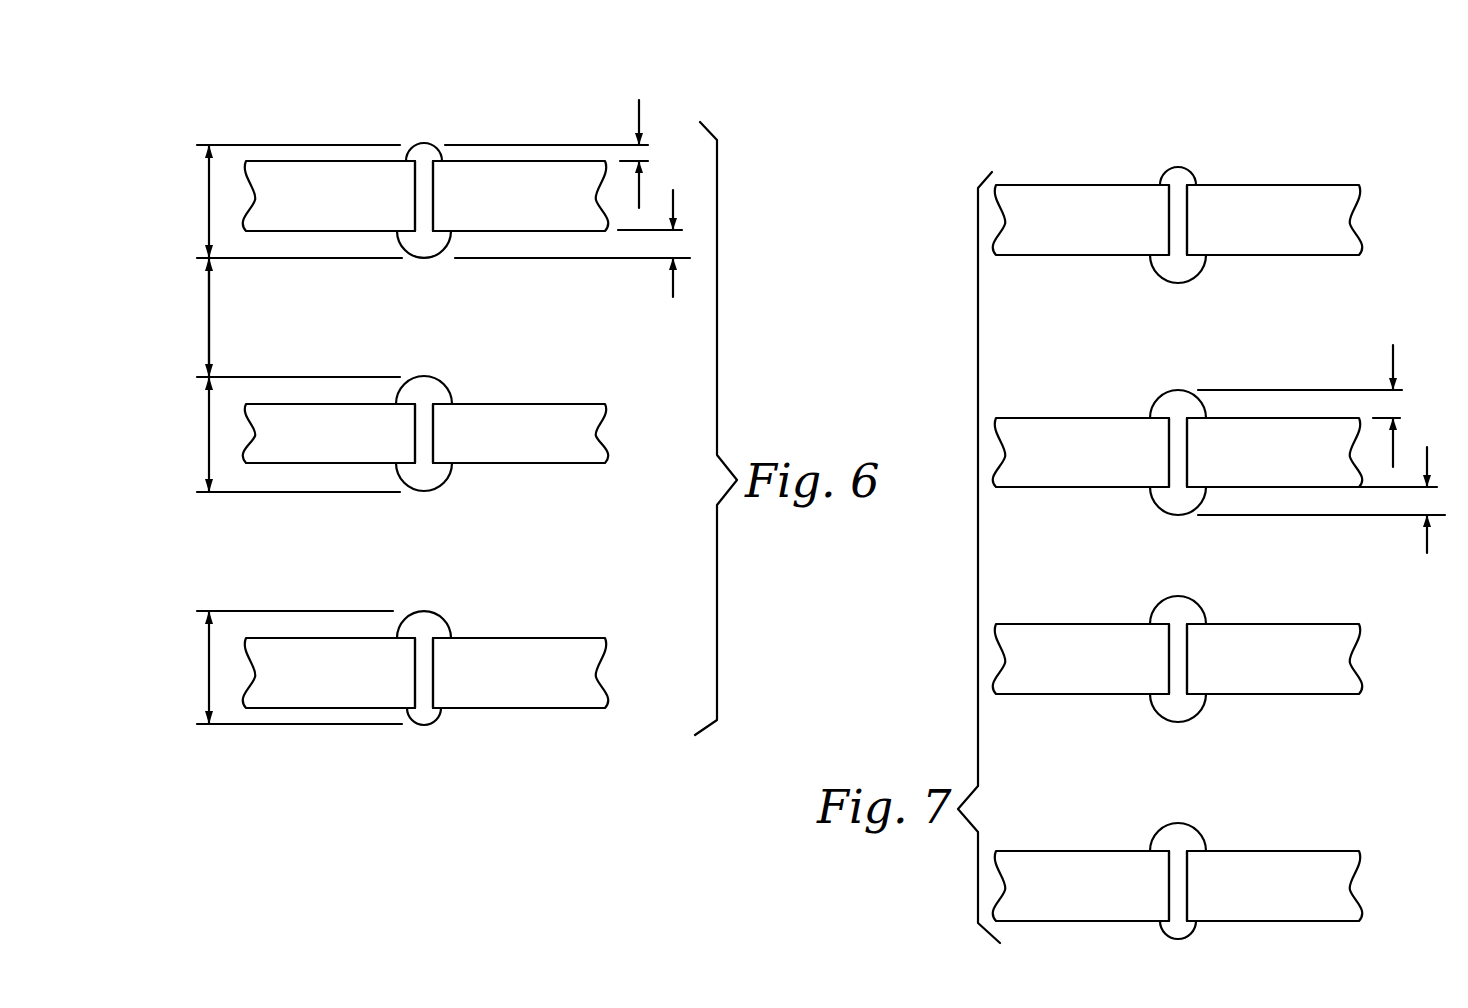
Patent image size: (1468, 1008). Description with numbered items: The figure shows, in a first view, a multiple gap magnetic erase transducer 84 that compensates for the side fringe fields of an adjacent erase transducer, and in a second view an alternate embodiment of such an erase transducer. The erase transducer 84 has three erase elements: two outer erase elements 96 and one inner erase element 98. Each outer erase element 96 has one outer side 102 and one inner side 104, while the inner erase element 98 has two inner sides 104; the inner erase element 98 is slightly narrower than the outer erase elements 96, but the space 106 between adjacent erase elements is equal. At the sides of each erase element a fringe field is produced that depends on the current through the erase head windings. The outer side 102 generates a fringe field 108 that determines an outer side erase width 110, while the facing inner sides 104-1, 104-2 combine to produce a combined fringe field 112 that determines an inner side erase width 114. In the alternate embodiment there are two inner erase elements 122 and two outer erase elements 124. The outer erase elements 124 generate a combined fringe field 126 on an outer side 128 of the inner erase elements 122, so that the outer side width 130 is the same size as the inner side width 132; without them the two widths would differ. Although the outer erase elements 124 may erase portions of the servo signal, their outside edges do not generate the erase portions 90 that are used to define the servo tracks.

In FIG. 6, the multiple gap magnetic erase transducer 84 is at (236, 103).
In FIG. 6, the erase portions 90 is at (209, 204).
In FIG. 6, the outer erase elements 96 is at (365, 177).
In FIG. 6, the inner erase element 98 is at (366, 411).
In FIG. 6, the outer side 102 is at (556, 160).
In FIG. 6, the inner side 104 is at (566, 465).
In FIG. 7, the inner side 104 is at (1315, 490).
In FIG. 6, the inner side 104-1 is at (564, 232).
In FIG. 6, the inner side 104-2 is at (586, 392).
In FIG. 6, the space 106 is at (209, 304).
In FIG. 6, the fringe field 108 is at (431, 142).
In FIG. 6, the outer side erase width 110 is at (641, 113).
In FIG. 6, the combined fringe field 112 is at (436, 260).
In FIG. 6, the inner side erase width 114 is at (672, 286).
In FIG. 7, the inner erase elements 122 is at (1068, 432).
In FIG. 7, the outer erase elements 124 is at (1120, 202).
In FIG. 7, the combined fringe field 126 is at (1185, 392).
In FIG. 7, the outer side 128 is at (1115, 418).
In FIG. 7, the outer side width 130 is at (1394, 358).
In FIG. 7, the inner side width 132 is at (1427, 548).